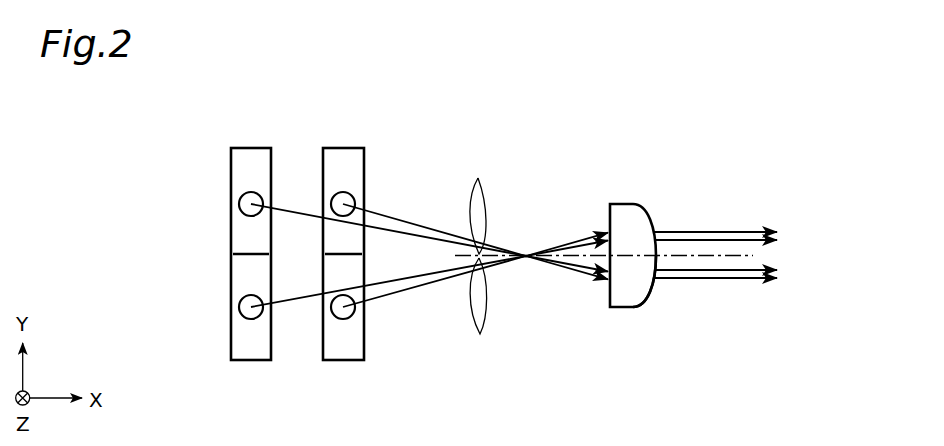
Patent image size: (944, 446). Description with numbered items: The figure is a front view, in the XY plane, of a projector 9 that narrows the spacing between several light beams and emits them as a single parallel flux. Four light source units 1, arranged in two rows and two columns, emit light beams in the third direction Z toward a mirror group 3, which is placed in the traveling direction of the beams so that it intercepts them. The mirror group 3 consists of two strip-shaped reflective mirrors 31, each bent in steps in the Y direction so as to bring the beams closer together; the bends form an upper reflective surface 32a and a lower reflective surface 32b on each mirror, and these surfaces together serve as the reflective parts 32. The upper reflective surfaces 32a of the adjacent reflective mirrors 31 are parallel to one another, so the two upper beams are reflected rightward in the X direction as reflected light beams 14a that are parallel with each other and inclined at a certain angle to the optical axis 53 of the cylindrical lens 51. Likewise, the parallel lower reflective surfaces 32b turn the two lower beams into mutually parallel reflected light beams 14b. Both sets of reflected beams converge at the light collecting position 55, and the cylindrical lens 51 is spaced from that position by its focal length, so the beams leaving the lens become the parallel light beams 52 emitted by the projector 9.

The light source unit 1 is at (339, 193).
The mirror group 3 is at (270, 228).
The reflective mirror 31 is at (347, 148).
The reflective part 32 is at (270, 251).
The upper reflective surface 32a is at (248, 167).
The lower reflective surface 32b is at (297, 308).
The reflected light beam 14a is at (429, 216).
The reflected light beam 14b is at (429, 297).
The light collecting position 55 is at (528, 246).
The projector 9 is at (693, 194).
The cylindrical lens 51 is at (628, 217).
The optical axis 53 is at (640, 255).
The parallel light beam 52 is at (722, 230).